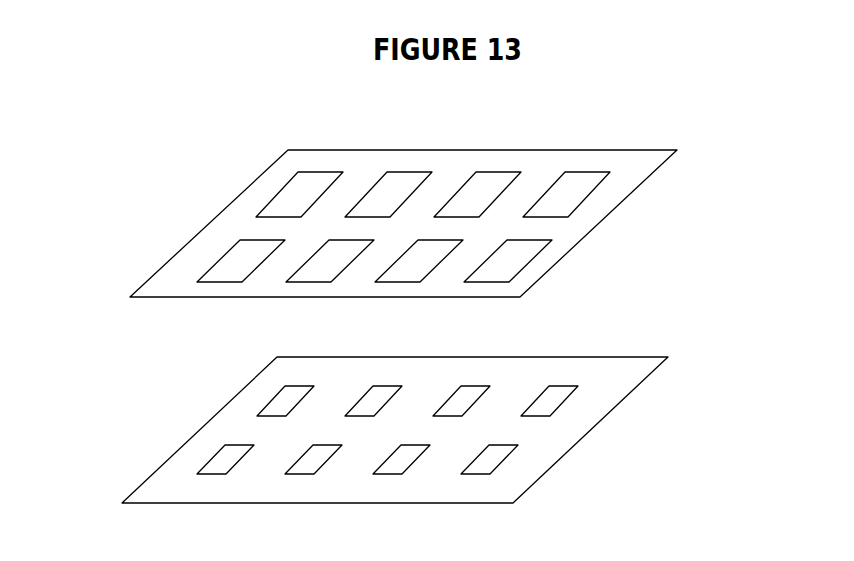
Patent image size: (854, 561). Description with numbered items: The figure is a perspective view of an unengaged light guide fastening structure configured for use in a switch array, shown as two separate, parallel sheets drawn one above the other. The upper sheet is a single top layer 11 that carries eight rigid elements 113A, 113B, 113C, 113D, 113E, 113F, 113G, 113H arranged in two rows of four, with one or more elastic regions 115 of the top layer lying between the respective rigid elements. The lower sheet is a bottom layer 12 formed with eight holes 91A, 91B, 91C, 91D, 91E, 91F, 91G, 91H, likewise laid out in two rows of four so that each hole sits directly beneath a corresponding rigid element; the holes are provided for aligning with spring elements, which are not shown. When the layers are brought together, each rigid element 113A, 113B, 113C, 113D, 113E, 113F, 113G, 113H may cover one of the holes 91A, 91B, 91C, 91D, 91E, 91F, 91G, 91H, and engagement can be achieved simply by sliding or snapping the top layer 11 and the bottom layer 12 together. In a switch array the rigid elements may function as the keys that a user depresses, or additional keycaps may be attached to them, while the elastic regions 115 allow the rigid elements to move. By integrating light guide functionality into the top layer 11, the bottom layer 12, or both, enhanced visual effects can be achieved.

The top layer 11 is at (210, 222).
The bottom layer 12 is at (208, 420).
The elastic region 115 is at (530, 191).
The rigid element 113A is at (315, 187).
The rigid element 113B is at (398, 188).
The rigid element 113C is at (486, 188).
The rigid element 113D is at (580, 189).
The rigid element 113E is at (226, 275).
The rigid element 113F is at (323, 272).
The rigid element 113G is at (430, 254).
The rigid element 113H is at (512, 267).
The hole 91A is at (294, 400).
The hole 91B is at (384, 401).
The hole 91C is at (470, 403).
The hole 91D is at (559, 405).
The hole 91E is at (230, 467).
The hole 91F is at (318, 467).
The hole 91G is at (401, 467).
The hole 91H is at (493, 467).